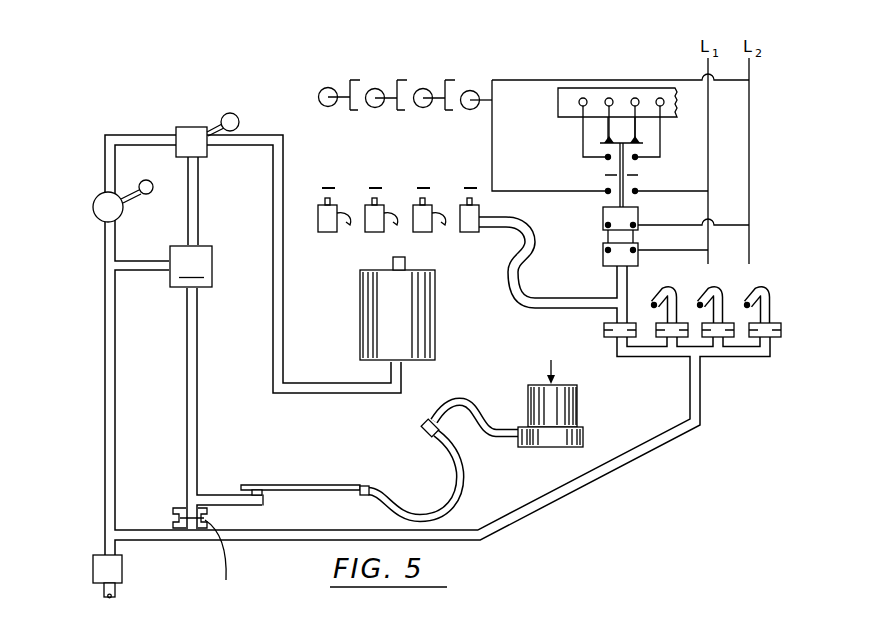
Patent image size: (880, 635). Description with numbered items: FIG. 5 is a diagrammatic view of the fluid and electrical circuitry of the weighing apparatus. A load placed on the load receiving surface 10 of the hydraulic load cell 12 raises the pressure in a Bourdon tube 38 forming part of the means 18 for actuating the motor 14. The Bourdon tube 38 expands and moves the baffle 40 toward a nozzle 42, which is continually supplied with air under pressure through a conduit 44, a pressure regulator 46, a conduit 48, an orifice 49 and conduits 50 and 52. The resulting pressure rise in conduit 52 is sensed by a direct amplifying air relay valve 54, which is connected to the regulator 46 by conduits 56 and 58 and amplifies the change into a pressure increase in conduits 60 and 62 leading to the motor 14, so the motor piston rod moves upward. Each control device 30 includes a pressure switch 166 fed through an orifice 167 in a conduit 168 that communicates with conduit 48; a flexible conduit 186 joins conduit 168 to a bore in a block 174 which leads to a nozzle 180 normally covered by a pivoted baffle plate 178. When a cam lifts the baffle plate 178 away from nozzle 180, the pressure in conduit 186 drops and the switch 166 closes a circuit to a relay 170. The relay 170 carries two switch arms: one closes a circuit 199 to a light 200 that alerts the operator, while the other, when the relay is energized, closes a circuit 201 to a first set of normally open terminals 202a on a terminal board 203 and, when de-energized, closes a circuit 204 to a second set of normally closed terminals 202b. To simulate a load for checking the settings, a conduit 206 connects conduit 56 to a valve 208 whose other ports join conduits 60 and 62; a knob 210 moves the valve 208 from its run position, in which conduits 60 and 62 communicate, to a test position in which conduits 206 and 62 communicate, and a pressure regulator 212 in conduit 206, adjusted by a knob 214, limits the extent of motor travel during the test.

The load receiving surface 10 is at (537, 385).
The hydraulic load cell 12 is at (592, 401).
The motor 14 is at (447, 324).
The means for actuating the motor 18 is at (330, 464).
The control device 30 is at (593, 219).
The Bourdon tube 38 is at (447, 497).
The baffle 40 is at (310, 490).
The nozzle 42 is at (262, 493).
The conduit 44 is at (104, 590).
The pressure regulator 46 is at (122, 568).
The conduit 48 is at (160, 528).
The orifice 49 is at (228, 556).
The conduit 50 is at (186, 470).
The conduit 52 is at (215, 494).
The direct amplifying air relay valve 54 is at (191, 266).
The conduit 56 is at (147, 261).
The conduit 58 is at (105, 390).
The conduit 60 is at (199, 197).
The conduit 62 is at (273, 227).
The pressure switch 166 is at (603, 259).
The orifice 167 is at (603, 330).
The conduit 168 is at (545, 497).
The relay 170 is at (638, 214).
The block 174 is at (463, 205).
The baffle plate 178 is at (330, 187).
The nozzle 180 is at (419, 200).
The flexible conduit 186 is at (511, 268).
The circuit 199 is at (443, 110).
The light 200 is at (466, 90).
The circuit 201 is at (583, 140).
The first set of terminals 202a is at (661, 98).
The second set of terminals 202b is at (636, 98).
The terminal board 203 is at (558, 100).
The circuit 204 is at (636, 130).
The conduit 206 is at (105, 168).
The valve 208 is at (190, 126).
The knob 210 is at (230, 112).
The pressure regulator 212 is at (96, 220).
The knob 214 is at (144, 179).